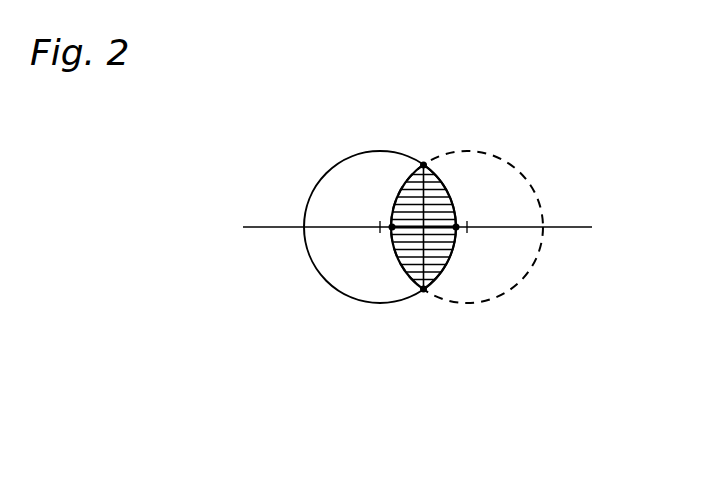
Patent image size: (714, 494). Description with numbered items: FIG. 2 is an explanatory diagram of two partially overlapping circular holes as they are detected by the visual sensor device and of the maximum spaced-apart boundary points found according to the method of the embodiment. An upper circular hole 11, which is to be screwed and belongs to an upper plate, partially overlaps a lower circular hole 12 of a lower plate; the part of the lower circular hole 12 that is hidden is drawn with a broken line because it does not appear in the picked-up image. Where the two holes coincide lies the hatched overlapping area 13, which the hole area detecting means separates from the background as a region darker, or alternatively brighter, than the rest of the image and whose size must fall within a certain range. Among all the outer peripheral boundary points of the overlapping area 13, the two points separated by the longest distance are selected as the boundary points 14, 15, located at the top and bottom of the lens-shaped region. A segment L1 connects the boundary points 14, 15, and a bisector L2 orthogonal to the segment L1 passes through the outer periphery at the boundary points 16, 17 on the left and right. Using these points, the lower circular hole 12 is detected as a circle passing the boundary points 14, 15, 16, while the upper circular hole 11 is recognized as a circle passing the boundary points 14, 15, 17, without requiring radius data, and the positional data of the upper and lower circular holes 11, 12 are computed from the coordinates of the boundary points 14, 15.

The upper circular hole 11 is at (302, 233).
The lower circular hole 12 is at (532, 270).
The overlapping area 13 is at (417, 260).
The boundary point 14 is at (424, 165).
The boundary point 15 is at (424, 289).
The boundary point 16 is at (392, 227).
The boundary point 17 is at (457, 229).
The segment L1 is at (427, 192).
The bisector L2 is at (558, 227).